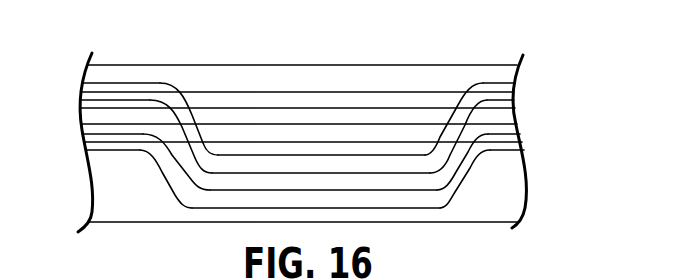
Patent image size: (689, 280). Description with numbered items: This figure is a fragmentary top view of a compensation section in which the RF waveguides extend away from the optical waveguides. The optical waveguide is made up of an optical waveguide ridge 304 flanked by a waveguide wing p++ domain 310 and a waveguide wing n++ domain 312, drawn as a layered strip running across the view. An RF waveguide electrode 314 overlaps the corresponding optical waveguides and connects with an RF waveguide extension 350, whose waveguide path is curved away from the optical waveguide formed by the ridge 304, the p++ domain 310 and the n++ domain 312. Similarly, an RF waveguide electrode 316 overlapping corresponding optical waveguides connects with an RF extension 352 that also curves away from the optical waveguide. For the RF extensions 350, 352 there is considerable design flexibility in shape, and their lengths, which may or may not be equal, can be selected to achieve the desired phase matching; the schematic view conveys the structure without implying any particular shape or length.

The optical waveguide ridge 304 is at (272, 115).
The p++ domain 310 is at (235, 98).
The n++ domain 312 is at (348, 130).
The RF waveguide electrode 314 is at (139, 92).
The RF waveguide electrode 316 is at (102, 145).
The RF waveguide extension 350 is at (198, 155).
The RF extension 352 is at (453, 197).